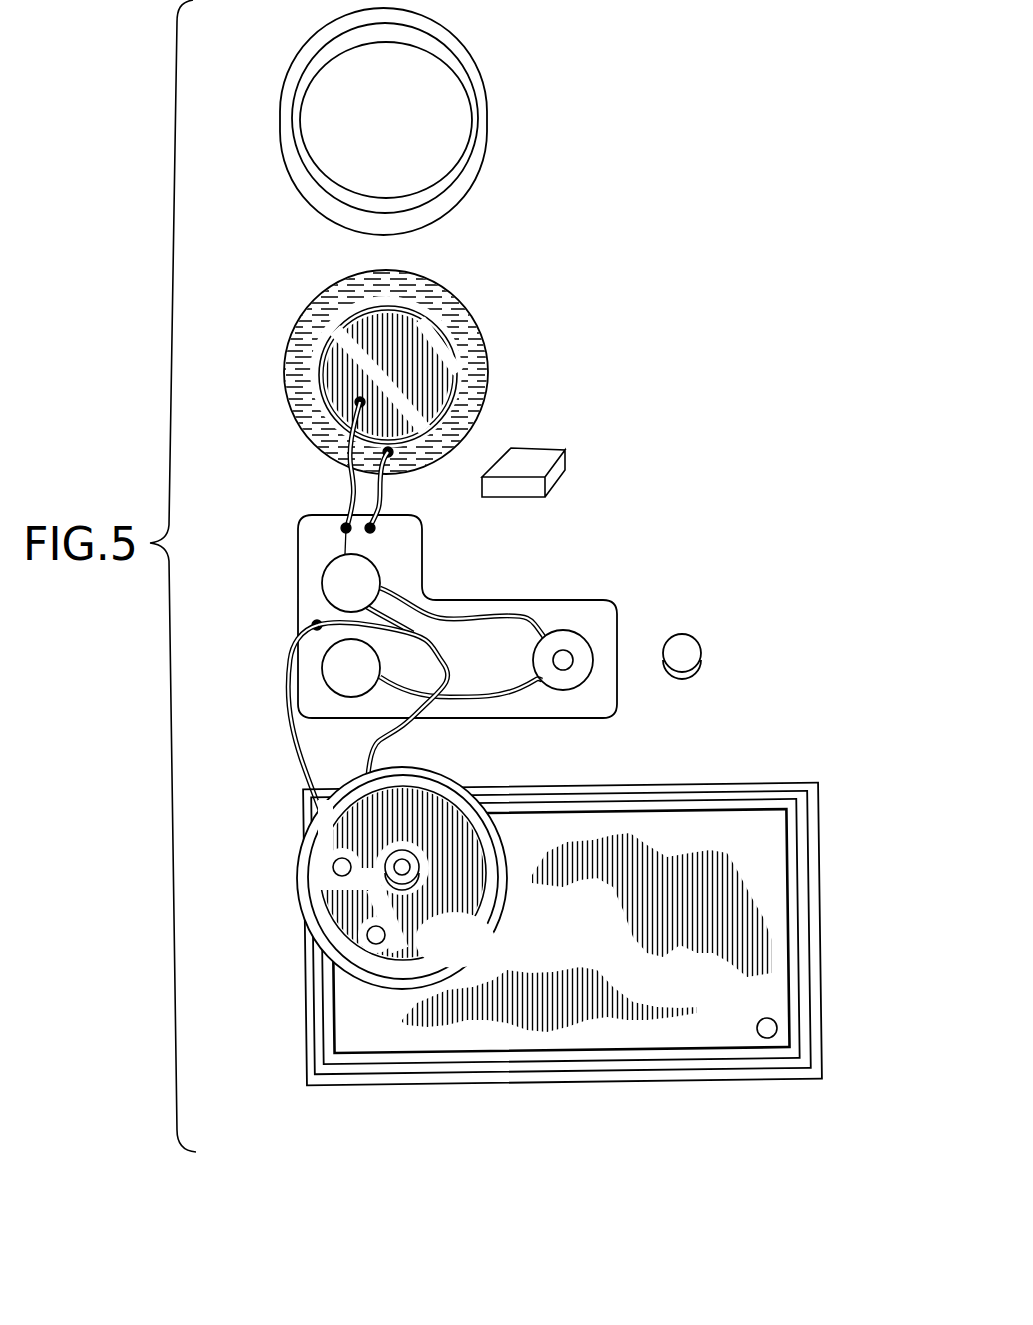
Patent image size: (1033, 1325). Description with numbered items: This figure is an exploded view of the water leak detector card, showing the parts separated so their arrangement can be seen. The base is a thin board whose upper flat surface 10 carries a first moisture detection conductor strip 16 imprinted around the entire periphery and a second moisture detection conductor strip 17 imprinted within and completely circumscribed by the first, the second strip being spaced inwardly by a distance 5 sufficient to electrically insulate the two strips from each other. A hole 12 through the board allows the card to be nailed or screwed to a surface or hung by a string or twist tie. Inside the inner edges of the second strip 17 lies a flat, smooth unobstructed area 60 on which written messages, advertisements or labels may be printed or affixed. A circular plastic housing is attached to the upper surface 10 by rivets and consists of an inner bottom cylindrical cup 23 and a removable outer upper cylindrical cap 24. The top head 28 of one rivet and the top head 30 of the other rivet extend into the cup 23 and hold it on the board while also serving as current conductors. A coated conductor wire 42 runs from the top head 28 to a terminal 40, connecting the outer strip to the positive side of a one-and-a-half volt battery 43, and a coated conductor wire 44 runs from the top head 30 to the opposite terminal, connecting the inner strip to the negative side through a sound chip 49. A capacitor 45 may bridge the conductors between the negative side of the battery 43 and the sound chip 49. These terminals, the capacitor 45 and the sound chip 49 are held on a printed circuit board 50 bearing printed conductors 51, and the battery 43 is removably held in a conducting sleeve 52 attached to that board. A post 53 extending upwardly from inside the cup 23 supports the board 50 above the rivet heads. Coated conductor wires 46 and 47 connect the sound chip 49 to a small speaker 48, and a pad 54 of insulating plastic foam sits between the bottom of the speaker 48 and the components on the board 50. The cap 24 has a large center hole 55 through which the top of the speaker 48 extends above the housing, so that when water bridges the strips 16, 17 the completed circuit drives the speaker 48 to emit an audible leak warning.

The distance 5 is at (803, 893).
The upper flat surface 10 is at (753, 822).
The hole 12 is at (773, 1028).
The first water leak or moisture detection conductor strip 16 is at (650, 1072).
The second water leak or moisture detection conductor strip 17 is at (482, 1057).
The inner bottom cylindrical cup 23 is at (388, 980).
The removable outer upper cylindrical cap 24 is at (472, 168).
The top head 28 is at (333, 865).
The top head 30 is at (367, 935).
The terminal 40 is at (317, 625).
The coated conductor wire 42 is at (300, 752).
The battery 43 is at (690, 640).
The coated conductor wire 44 is at (385, 737).
The capacitor 45 is at (344, 676).
The coated conductor wire 46 is at (342, 491).
The coated conductor wire 47 is at (380, 490).
The speaker 48 is at (455, 315).
The sound chip 49 is at (347, 587).
The printed circuit board 50 is at (586, 684).
The conductors 51 is at (533, 622).
The conducting sleeve 52 is at (576, 670).
The post 53 is at (413, 858).
The pad 54 is at (527, 460).
The large center hole 55 is at (408, 118).
The flat, smooth unobstructed area 60 is at (587, 932).